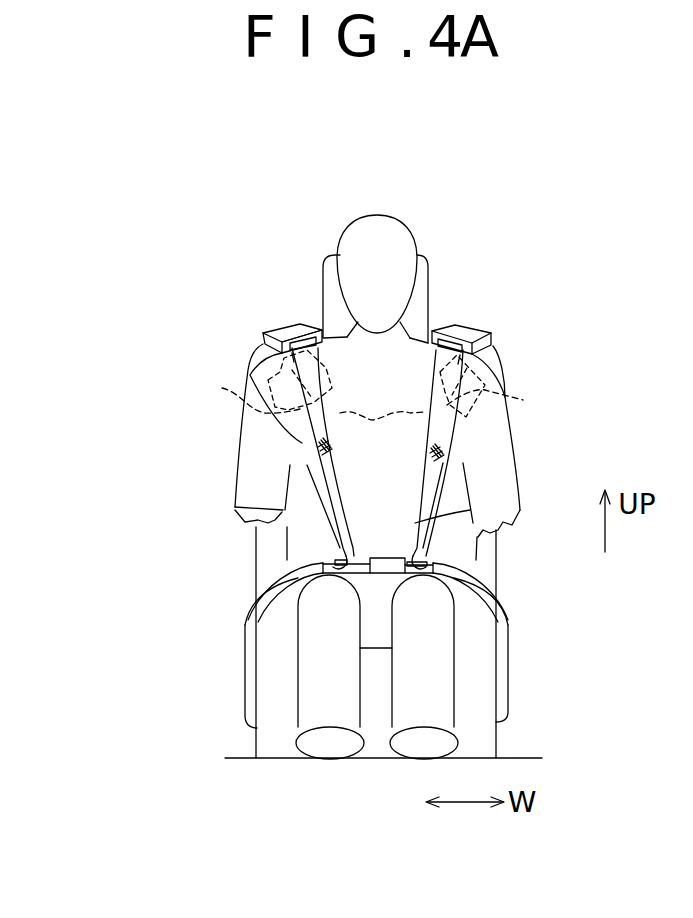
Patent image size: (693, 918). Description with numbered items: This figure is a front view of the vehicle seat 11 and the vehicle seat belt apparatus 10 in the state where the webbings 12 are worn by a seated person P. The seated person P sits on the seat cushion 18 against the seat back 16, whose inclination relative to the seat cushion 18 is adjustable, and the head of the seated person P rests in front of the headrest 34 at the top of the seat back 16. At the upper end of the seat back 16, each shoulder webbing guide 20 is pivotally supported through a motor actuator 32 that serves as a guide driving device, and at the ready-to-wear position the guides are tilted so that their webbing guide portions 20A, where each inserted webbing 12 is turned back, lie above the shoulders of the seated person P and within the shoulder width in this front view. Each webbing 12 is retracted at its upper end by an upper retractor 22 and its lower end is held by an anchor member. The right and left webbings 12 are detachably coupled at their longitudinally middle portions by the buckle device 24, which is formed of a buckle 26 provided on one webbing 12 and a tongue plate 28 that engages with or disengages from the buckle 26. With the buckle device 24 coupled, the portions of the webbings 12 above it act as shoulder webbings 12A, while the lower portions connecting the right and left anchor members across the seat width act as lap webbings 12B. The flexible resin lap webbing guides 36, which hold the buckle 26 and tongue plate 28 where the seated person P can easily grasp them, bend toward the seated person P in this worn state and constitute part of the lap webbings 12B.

The seated person P is at (416, 237).
The vehicle seat belt apparatus 10 is at (360, 416).
The vehicle seat 11 is at (345, 488).
The webbing 12 is at (455, 449).
The shoulder webbing 12A is at (268, 390).
The lap webbing 12B is at (480, 577).
The seat back 16 is at (480, 548).
The seat cushion 18 is at (477, 742).
The shoulder webbing guide 20 is at (263, 333).
The webbing guide portion 20A is at (297, 321).
The upper retractor 22 is at (372, 424).
The buckle device 24 is at (359, 536).
The buckle 26 is at (387, 548).
The tongue plate 28 is at (345, 552).
The motor actuator 32 is at (304, 330).
The headrest 34 is at (423, 298).
The lap webbing guide 36 is at (255, 588).